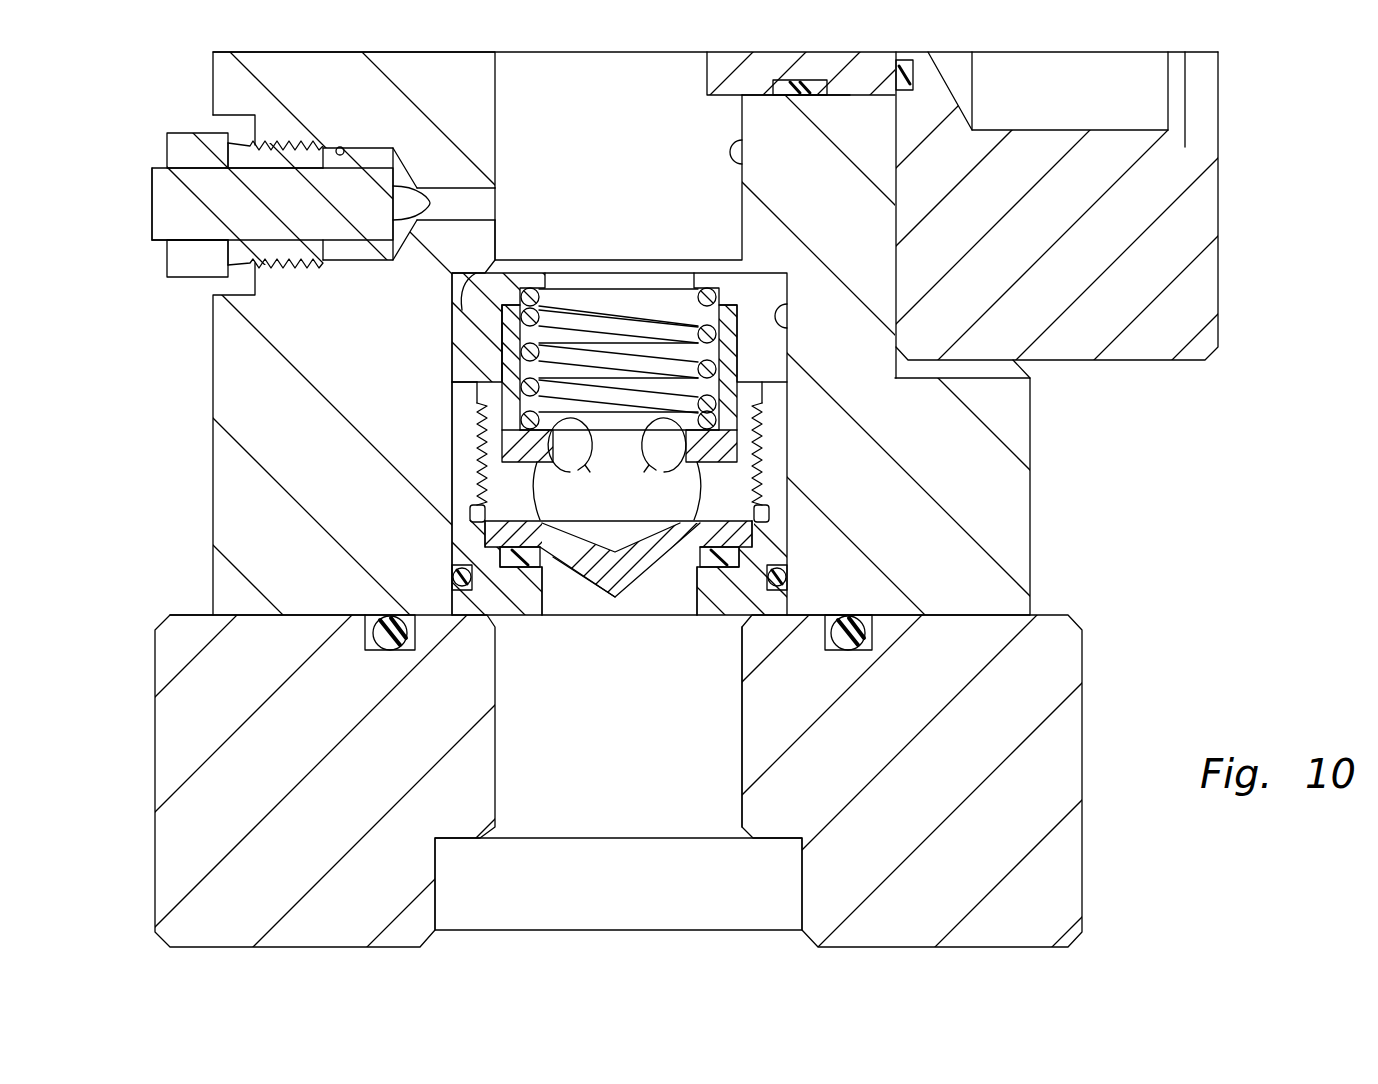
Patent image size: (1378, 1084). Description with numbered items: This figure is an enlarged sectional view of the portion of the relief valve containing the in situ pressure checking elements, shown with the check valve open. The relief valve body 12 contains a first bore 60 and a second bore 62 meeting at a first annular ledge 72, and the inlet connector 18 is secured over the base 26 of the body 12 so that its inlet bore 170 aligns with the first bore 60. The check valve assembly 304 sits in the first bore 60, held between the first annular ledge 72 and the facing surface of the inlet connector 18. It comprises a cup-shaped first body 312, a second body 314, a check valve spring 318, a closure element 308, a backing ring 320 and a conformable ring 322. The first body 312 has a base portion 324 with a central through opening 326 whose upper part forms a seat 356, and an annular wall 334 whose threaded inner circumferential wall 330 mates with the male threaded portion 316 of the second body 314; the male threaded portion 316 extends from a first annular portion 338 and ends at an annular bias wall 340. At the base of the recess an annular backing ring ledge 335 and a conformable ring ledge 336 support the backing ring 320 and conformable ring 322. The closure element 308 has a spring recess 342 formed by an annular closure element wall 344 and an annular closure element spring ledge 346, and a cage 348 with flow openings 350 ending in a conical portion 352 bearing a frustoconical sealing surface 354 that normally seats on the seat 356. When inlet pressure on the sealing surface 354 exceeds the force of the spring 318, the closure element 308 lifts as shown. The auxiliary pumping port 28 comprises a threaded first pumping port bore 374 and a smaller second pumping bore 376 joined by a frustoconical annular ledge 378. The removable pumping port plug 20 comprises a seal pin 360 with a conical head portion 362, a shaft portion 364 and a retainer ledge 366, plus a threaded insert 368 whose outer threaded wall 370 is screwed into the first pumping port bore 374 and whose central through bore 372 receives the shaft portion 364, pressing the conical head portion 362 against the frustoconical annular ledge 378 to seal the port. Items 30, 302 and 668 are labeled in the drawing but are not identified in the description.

The relief valve body 12 is at (213, 370).
The inlet connector 18 is at (735, 718).
The removable pumping port plug 20 is at (404, 233).
The base 26 is at (258, 618).
The auxiliary pumping port 28 is at (343, 147).
The cavity 30 is at (607, 161).
The first bore 60 is at (792, 312).
The second bore 62 is at (744, 150).
The first annular ledge 72 is at (455, 305).
The inlet bore 170 is at (607, 898).
The fitting body passage 302 is at (220, 228).
The check valve assembly 304 is at (532, 452).
The closure element 308 is at (763, 445).
The first body 312 is at (192, 614).
The second body 314 is at (770, 278).
The male threaded portion 316 is at (482, 500).
The check valve spring 318 is at (618, 320).
The backing ring 320 is at (770, 508).
The conformable ring 322 is at (524, 562).
The base portion 324 is at (752, 604).
The central through opening 326 is at (585, 600).
The inner circumferential wall 330 is at (478, 430).
The annular wall 334 is at (480, 470).
The annular backing ring ledge 335 is at (760, 536).
The conformable ring ledge 336 is at (746, 566).
The first annular portion 338 is at (468, 370).
The annular bias wall 340 is at (502, 556).
The spring recess 342 is at (702, 326).
The annular closure element wall 344 is at (742, 372).
The annular closure element spring ledge 346 is at (526, 420).
The cage 348 is at (706, 432).
The flow openings 350 is at (576, 465).
The conical portion 352 is at (624, 578).
The frustoconical sealing surface 354 is at (476, 524).
The seat 356 is at (690, 570).
The seal pin 360 is at (270, 185).
The conical head portion 362 is at (376, 170).
The shaft portion 364 is at (155, 183).
The retainer ledge 366 is at (320, 268).
The threaded insert 368 is at (165, 262).
The outer threaded wall 370 is at (276, 270).
The central through bore 372 is at (176, 240).
The threaded first pumping port bore 374 is at (303, 142).
The second pumping bore 376 is at (497, 205).
The frustoconical annular ledge 378 is at (396, 196).
The upper flange 668 is at (165, 155).